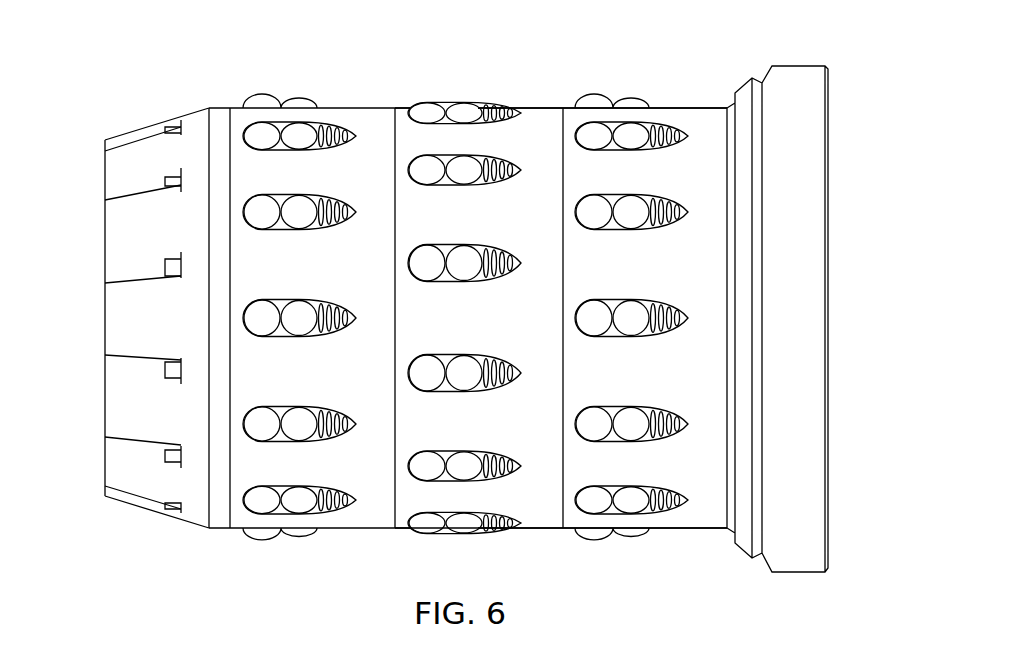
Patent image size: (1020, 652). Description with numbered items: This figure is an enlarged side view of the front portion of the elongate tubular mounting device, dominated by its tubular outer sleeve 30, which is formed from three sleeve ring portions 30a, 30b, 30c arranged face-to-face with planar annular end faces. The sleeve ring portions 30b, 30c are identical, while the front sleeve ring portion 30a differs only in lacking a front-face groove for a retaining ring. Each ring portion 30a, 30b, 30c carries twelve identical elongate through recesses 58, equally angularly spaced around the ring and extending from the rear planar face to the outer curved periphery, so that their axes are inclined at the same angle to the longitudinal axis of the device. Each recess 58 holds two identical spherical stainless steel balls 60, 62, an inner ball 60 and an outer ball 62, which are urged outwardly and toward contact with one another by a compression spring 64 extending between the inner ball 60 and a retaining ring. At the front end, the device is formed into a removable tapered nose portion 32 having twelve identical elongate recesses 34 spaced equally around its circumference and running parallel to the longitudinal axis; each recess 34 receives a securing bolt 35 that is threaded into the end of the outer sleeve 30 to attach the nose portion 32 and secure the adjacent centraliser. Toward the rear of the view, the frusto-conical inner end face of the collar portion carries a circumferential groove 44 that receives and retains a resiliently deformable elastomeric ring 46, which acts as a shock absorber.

The outer sleeve 30 is at (352, 100).
The front sleeve ring portion 30a is at (329, 278).
The sleeve ring portion 30b is at (484, 332).
The sleeve ring portion 30c is at (658, 280).
The tapered nose portion 32 is at (196, 108).
The elongate recesses 34 is at (127, 198).
The securing bolt 35 is at (166, 180).
The circumferential groove 44 is at (752, 645).
The elastomeric ring 46 is at (743, 95).
The elongate through recesses 58 is at (663, 131).
The inner ball 60 is at (297, 98).
The outer ball 62 is at (253, 97).
The compression spring 64 is at (331, 147).